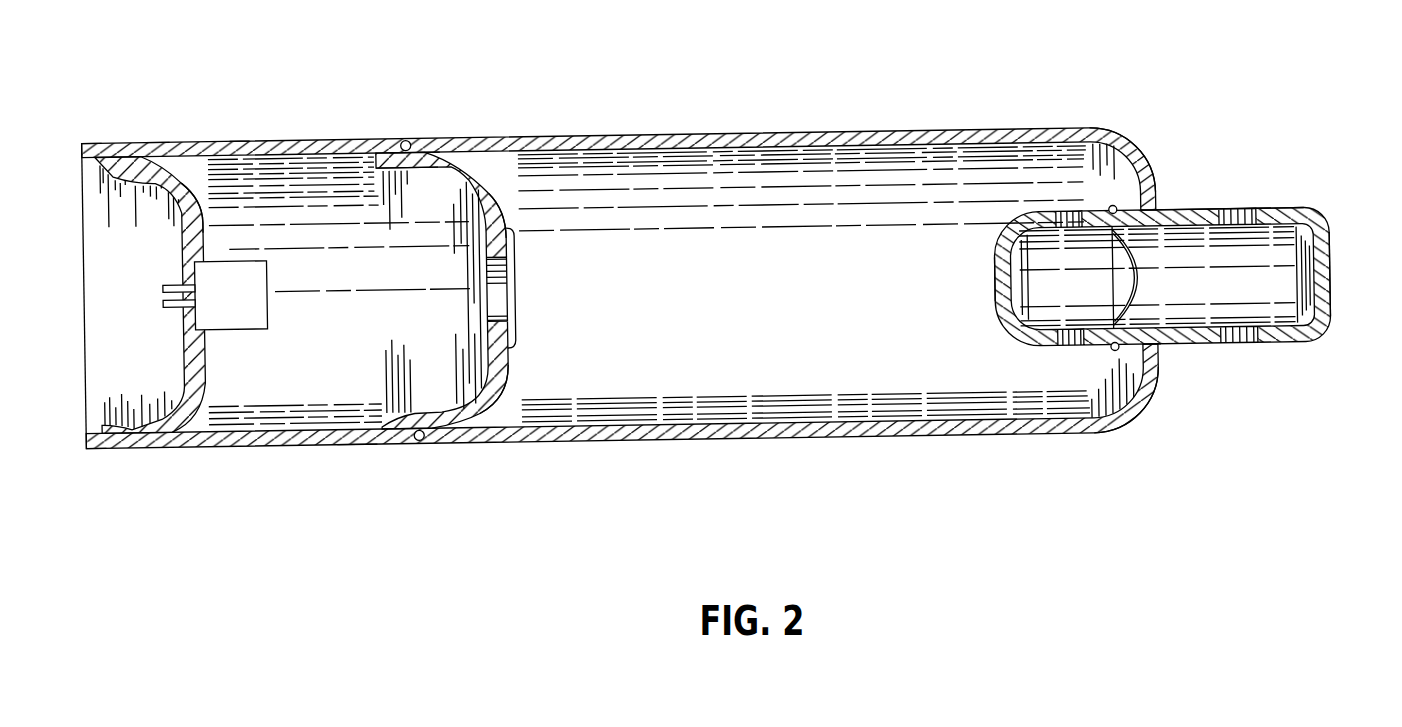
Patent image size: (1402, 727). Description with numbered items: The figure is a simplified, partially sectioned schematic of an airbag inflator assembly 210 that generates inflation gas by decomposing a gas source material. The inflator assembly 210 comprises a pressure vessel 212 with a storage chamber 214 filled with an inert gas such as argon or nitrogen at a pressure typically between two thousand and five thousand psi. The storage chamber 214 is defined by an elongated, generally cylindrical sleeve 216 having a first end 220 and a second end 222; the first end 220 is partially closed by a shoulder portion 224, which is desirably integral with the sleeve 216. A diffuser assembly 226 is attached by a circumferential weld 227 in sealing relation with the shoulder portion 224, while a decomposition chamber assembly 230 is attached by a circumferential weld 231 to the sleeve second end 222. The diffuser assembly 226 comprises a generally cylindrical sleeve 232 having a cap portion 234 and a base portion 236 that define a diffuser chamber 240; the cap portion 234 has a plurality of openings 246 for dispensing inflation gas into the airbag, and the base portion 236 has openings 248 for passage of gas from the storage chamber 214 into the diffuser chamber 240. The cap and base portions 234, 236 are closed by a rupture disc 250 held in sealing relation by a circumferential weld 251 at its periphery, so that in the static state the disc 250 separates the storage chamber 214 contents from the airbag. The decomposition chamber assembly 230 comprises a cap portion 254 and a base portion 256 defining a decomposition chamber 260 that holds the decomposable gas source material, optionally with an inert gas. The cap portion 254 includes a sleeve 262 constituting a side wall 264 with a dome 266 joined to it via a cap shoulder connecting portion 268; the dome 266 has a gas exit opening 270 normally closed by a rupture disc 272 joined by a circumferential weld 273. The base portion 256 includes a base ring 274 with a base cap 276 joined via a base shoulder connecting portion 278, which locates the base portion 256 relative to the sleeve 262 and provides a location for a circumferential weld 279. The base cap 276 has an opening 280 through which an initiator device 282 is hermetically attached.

The airbag inflator assembly 210 is at (747, 122).
The pressure vessel 212 is at (886, 133).
The storage chamber 214 is at (623, 165).
The sleeve 216 is at (710, 439).
The first end 220 is at (1122, 142).
The second end 222 is at (431, 146).
The shoulder portion 224 is at (1153, 376).
The diffuser assembly 226 is at (1298, 216).
The circumferential weld 227 is at (1156, 216).
The decomposition chamber assembly 230 is at (242, 135).
The circumferential weld 231 is at (407, 136).
The sleeve 232 is at (1226, 351).
The cap portion 234 is at (1316, 351).
The base portion 236 is at (995, 281).
The diffuser chamber 240 is at (1330, 266).
The openings 246 is at (1247, 217).
The openings 248 is at (1063, 217).
The rupture disc 250 is at (1141, 277).
The circumferential weld 251 is at (1115, 216).
The cap portion 254 is at (353, 423).
The base portion 256 is at (176, 403).
The decomposition chamber 260 is at (281, 394).
The sleeve 262 is at (318, 134).
The side wall 264 is at (160, 134).
The dome 266 is at (505, 362).
The cap shoulder connecting portion 268 is at (400, 165).
The gas exit opening 270 is at (490, 295).
The rupture disc 272 is at (517, 290).
The circumferential weld 273 is at (510, 228).
The base ring 274 is at (95, 134).
The base cap 276 is at (207, 201).
The base shoulder connecting portion 278 is at (132, 294).
The circumferential weld 279 is at (123, 439).
The opening 280 is at (184, 305).
The initiator device 282 is at (266, 290).